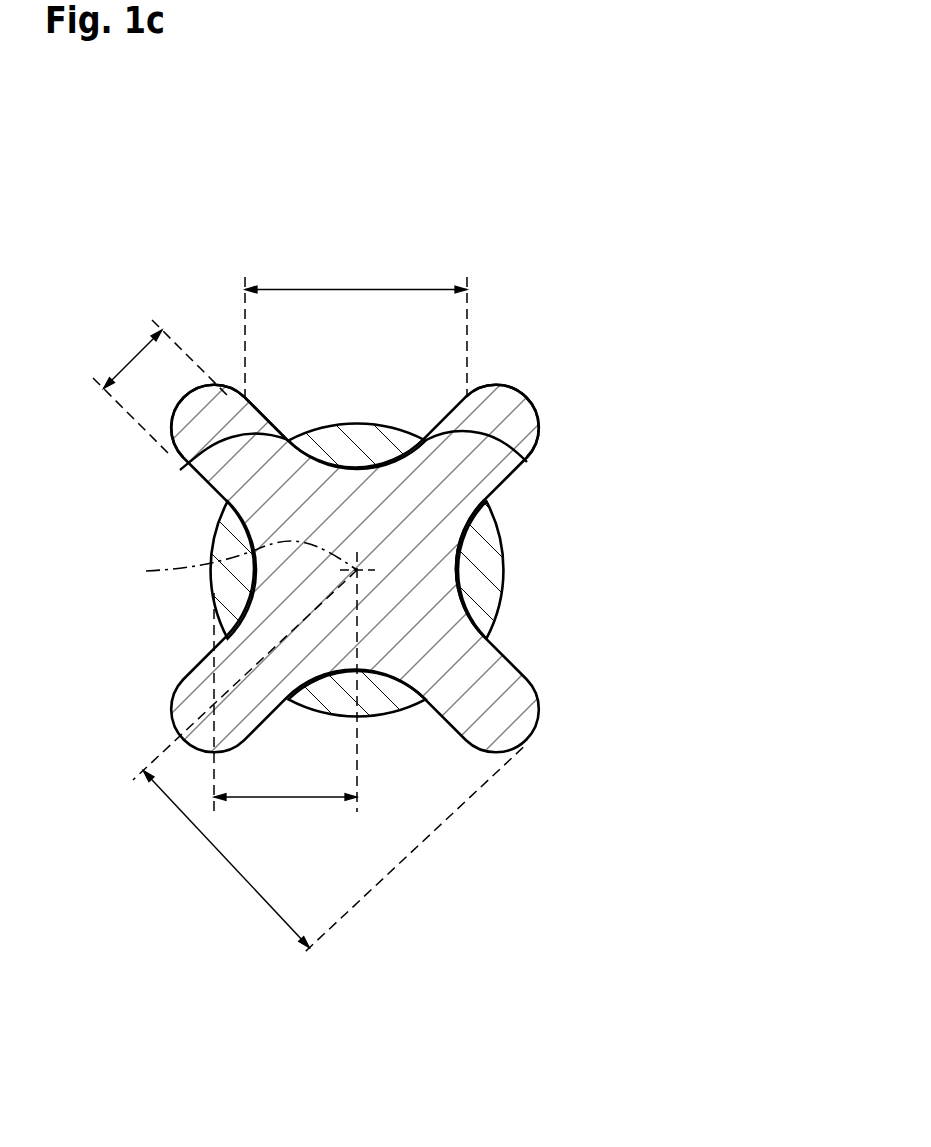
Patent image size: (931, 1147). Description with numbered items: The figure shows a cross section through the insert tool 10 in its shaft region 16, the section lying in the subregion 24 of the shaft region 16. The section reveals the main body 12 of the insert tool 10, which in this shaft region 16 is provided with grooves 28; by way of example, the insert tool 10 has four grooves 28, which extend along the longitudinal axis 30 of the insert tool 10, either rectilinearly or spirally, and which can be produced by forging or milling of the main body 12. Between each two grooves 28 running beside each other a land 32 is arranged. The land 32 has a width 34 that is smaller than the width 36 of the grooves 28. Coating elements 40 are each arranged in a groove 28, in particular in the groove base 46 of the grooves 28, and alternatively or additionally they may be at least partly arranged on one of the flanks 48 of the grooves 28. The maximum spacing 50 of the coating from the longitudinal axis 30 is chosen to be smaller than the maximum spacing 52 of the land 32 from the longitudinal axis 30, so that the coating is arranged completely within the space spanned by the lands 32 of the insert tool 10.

The insert tool 10 is at (710, 244).
The main body 12 is at (418, 627).
The shaft region 16 is at (710, 447).
The first subregion 24 is at (710, 447).
The grooves 28 is at (313, 400).
The longitudinal axis 30 is at (242, 557).
The land 32 is at (186, 404).
The width 34 is at (133, 358).
The width 36 is at (355, 291).
The coating elements 40 is at (374, 423).
The groove base 46 is at (478, 517).
The flanks 48 is at (180, 470).
The maximum spacing 50 is at (284, 797).
The maximum spacing 52 is at (224, 861).